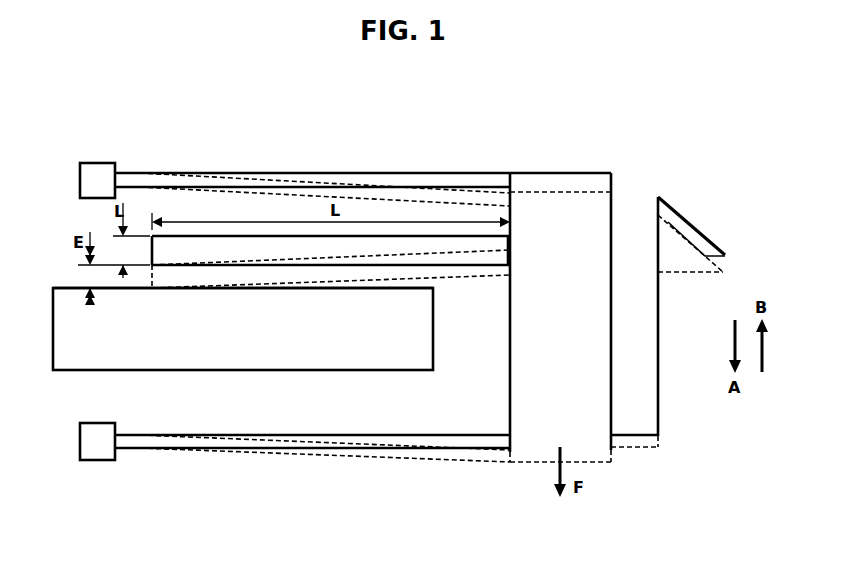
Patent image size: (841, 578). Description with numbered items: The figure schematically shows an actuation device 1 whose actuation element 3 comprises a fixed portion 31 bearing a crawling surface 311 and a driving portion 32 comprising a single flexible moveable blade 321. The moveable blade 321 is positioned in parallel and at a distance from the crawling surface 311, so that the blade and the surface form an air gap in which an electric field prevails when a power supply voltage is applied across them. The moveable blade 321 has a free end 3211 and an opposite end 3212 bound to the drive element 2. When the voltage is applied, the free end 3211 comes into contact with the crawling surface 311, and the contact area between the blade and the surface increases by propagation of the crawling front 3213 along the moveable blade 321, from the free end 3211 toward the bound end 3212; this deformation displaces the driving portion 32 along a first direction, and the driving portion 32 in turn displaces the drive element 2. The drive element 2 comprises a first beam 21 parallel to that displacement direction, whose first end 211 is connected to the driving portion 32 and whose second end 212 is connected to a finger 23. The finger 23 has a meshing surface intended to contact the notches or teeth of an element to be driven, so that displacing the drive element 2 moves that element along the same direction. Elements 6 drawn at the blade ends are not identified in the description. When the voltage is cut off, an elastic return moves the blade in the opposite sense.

The actuation device 1 is at (262, 534).
The drive element 2 is at (684, 222).
The actuation element 3 is at (386, 146).
The drive unit 6 is at (98, 168).
The first beam 21 is at (660, 342).
The finger 23 is at (705, 243).
The fixed portion 31 is at (65, 332).
The driving portion 32 is at (560, 173).
The first end 211 is at (660, 436).
The second end 212 is at (660, 273).
The crawling surface 311 is at (63, 287).
The moveable blade 321 is at (268, 234).
The free end 3211 is at (150, 243).
The end bound to the drive element 3212 is at (511, 247).
The crawling front 3213 is at (242, 289).